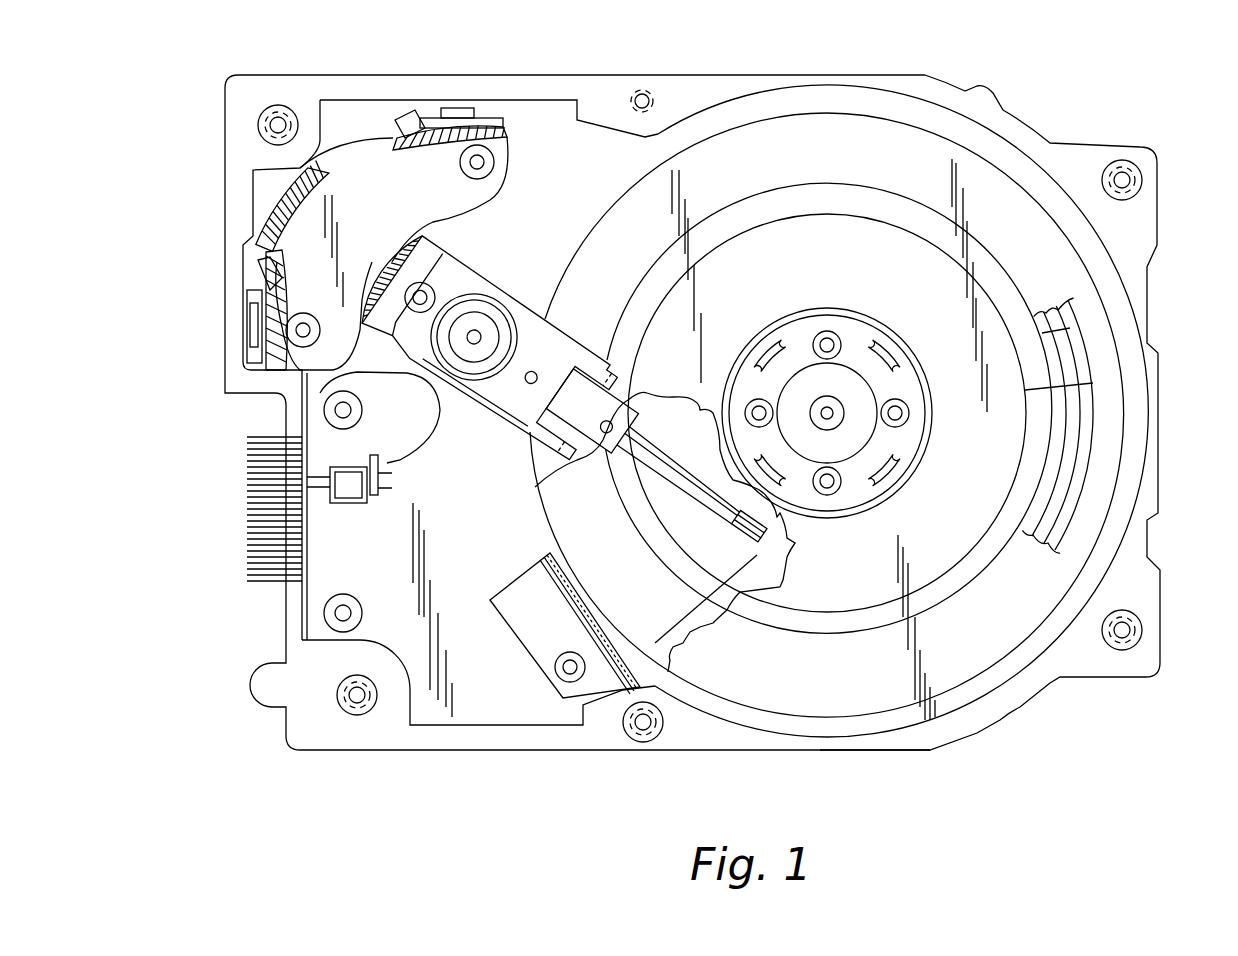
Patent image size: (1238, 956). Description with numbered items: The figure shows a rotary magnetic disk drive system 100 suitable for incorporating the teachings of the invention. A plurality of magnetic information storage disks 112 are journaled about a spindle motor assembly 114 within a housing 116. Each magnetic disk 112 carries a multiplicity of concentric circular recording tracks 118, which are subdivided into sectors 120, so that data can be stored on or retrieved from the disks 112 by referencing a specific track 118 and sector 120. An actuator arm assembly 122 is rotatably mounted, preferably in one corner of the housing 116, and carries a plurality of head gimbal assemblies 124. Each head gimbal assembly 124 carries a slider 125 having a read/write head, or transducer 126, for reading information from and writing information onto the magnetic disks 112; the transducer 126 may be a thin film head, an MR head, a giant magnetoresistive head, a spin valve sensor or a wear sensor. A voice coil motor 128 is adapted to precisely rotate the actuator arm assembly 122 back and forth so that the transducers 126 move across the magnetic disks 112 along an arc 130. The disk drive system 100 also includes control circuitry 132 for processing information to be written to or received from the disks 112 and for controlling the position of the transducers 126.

The rotary magnetic disk drive system 100 is at (916, 765).
The magnetic information storage disk 112 is at (984, 648).
The spindle motor assembly 114 is at (850, 360).
The housing 116 is at (655, 755).
The concentric circular recording track 118 is at (1103, 470).
The sector 120 is at (1018, 356).
The actuator arm assembly 122 is at (520, 303).
The head gimbal assembly 124 is at (735, 543).
The slider 125 is at (780, 587).
The transducer 126 is at (780, 542).
The voice coil motor 128 is at (372, 190).
The arc 130 is at (690, 613).
The control circuitry 132 is at (258, 268).